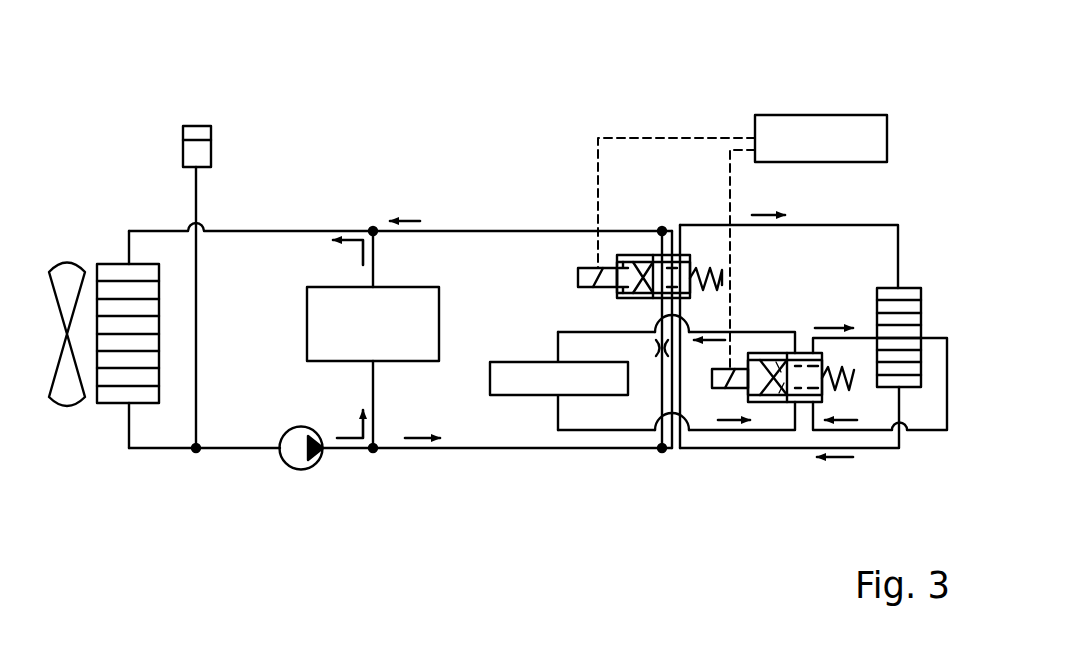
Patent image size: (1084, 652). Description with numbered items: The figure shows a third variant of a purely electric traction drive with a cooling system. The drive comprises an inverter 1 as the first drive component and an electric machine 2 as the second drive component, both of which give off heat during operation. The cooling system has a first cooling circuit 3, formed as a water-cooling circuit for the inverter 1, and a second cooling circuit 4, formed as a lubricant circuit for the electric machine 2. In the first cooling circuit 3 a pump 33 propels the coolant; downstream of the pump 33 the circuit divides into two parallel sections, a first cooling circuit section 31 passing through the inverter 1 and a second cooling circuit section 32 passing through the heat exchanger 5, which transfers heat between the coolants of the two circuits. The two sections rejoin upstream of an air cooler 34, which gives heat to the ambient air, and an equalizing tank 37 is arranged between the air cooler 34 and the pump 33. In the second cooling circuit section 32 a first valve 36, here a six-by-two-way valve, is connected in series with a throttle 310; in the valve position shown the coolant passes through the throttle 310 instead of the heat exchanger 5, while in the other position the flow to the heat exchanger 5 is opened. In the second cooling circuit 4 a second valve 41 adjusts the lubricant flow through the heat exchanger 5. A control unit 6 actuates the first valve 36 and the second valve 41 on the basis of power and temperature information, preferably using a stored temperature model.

The inverter 1 is at (307, 315).
The electric machine 2 is at (533, 361).
The first cooling circuit 3 is at (562, 221).
The second cooling circuit 4 is at (782, 318).
The heat exchanger 5 is at (905, 308).
The control unit 6 is at (790, 115).
The first cooling circuit section 31 is at (380, 410).
The second cooling circuit section 32 is at (491, 457).
The pump 33 is at (288, 468).
The air cooler 34 is at (118, 375).
The first valve 36 is at (646, 250).
The equalizing tank 37 is at (213, 148).
The second valve 41 is at (771, 407).
The throttle 310 is at (657, 348).